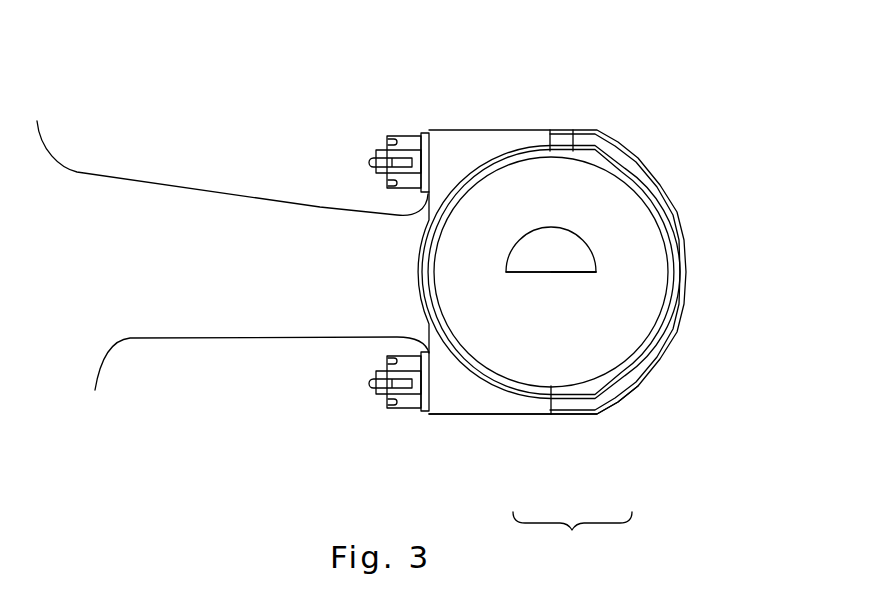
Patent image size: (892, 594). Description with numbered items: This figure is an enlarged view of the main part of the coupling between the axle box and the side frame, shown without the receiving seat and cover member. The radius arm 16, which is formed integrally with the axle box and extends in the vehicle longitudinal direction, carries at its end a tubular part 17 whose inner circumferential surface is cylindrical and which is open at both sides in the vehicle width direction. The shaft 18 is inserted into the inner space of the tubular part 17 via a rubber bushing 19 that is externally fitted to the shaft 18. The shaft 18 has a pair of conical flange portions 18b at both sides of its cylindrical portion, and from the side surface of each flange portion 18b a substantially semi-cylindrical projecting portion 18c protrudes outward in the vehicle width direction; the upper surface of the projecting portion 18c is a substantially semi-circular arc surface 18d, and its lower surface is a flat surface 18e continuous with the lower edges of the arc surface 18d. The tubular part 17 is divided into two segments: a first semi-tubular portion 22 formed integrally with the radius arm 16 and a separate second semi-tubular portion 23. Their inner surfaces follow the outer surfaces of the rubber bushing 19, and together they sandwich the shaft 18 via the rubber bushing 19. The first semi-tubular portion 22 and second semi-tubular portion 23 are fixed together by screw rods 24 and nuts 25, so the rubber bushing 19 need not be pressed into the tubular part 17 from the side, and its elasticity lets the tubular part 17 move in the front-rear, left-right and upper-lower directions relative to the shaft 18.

The radius arm 16 is at (182, 339).
The tubular part 17 is at (572, 536).
The shaft 18 is at (604, 225).
The conical flange portion 18b is at (490, 204).
The projecting portion 18c is at (577, 252).
The arc surface 18d is at (574, 232).
The flat surface 18e is at (573, 273).
The rubber bushing 19 is at (575, 150).
The first semi-tubular portion 22 is at (530, 415).
The second semi-tubular portion 23 is at (578, 415).
The screw rod 24 is at (377, 150).
The nut 25 is at (388, 140).